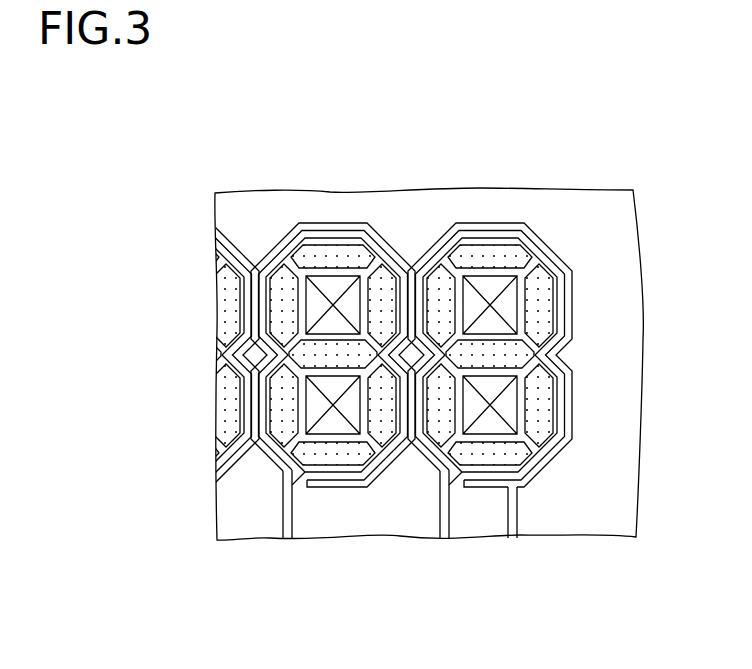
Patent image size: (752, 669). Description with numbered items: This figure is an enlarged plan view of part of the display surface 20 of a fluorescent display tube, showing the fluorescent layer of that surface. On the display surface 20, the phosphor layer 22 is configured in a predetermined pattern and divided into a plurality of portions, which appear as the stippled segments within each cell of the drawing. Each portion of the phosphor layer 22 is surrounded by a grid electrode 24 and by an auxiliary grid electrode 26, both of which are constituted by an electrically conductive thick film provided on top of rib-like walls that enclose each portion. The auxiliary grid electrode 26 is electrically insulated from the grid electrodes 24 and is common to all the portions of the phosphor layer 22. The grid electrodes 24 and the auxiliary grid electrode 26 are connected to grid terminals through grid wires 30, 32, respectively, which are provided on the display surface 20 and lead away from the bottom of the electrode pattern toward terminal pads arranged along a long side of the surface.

The display surface 20 is at (600, 520).
The phosphor layer 22 is at (334, 252).
The grid electrode 24 is at (277, 253).
The auxiliary grid electrode 26 is at (467, 222).
The grid wire 30 is at (287, 520).
The grid wire 32 is at (513, 523).